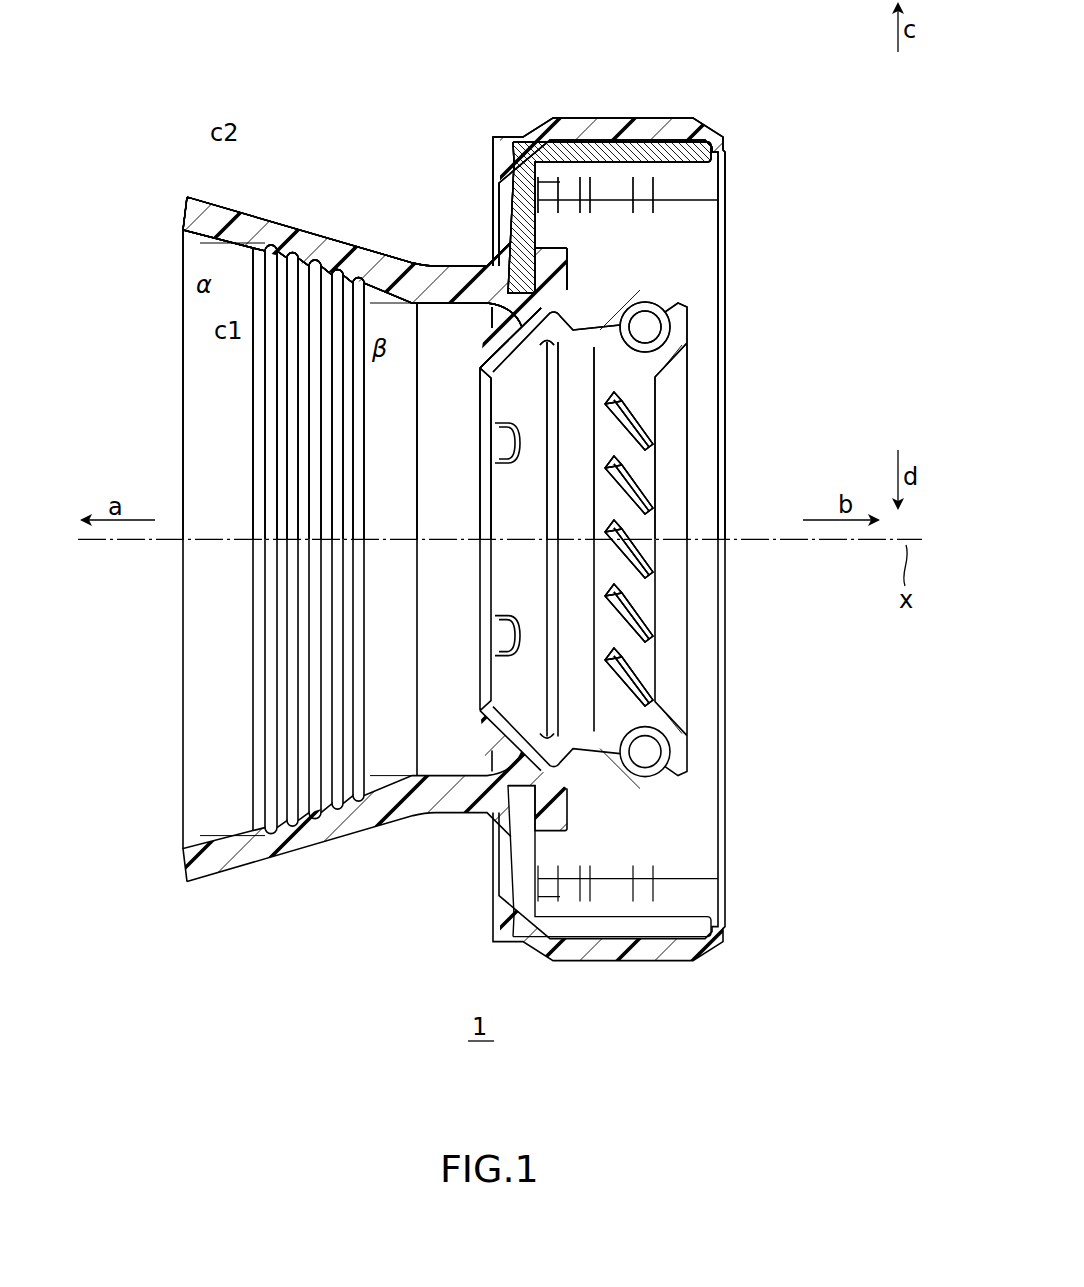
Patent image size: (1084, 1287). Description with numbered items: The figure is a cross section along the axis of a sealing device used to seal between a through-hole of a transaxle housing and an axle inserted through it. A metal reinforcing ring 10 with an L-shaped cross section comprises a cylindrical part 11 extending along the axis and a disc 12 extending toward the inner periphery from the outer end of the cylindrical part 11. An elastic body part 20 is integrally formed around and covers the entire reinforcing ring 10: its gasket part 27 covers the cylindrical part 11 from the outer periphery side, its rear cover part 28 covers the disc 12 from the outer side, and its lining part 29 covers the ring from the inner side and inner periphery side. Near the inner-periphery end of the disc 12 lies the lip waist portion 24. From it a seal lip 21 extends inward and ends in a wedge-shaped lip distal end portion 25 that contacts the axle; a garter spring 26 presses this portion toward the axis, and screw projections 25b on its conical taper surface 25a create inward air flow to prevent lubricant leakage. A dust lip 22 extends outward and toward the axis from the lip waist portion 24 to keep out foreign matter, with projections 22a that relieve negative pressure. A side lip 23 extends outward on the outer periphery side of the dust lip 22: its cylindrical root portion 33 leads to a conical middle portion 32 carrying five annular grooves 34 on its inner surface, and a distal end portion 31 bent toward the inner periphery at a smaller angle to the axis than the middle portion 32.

The reinforcing ring 10 is at (683, 133).
The cylindrical part 11 is at (695, 183).
The disc 12 is at (535, 222).
The elastic body part 20 is at (466, 137).
The seal lip 21 is at (703, 336).
The dust lip 22 is at (486, 733).
The projections 22a is at (490, 735).
The side lip 23 is at (266, 170).
The lip waist portion 24 is at (562, 298).
The lip distal end portion 25 is at (668, 378).
The taper surface 25a is at (645, 648).
The screw projections 25b is at (625, 572).
The garter spring 26 is at (662, 304).
The gasket part 27 is at (642, 125).
The rear cover part 28 is at (497, 222).
The lining part 29 is at (614, 176).
The distal end portion 31 is at (208, 202).
The middle portion 32 is at (335, 232).
The root portion 33 is at (452, 275).
The groove 34 is at (271, 838).